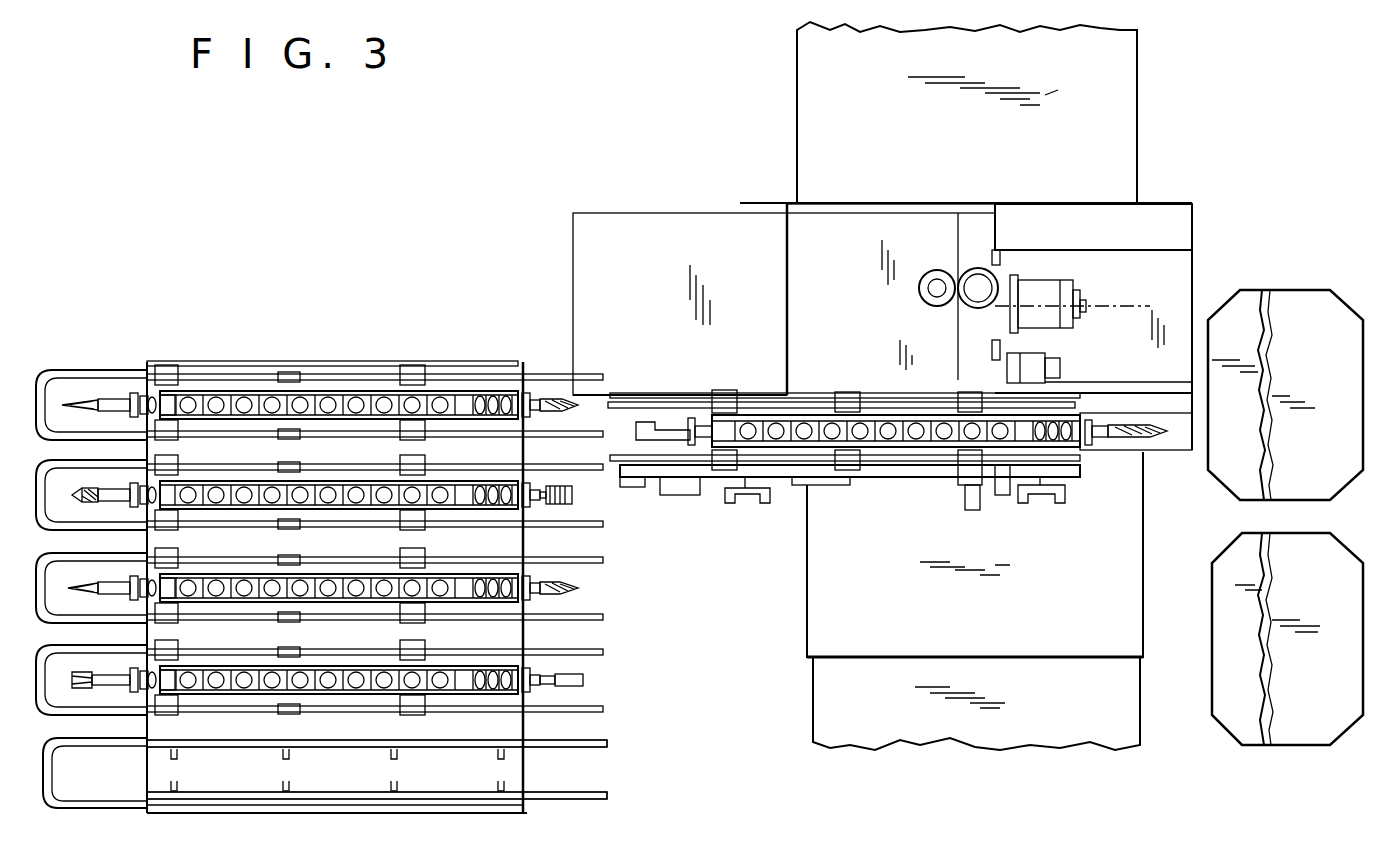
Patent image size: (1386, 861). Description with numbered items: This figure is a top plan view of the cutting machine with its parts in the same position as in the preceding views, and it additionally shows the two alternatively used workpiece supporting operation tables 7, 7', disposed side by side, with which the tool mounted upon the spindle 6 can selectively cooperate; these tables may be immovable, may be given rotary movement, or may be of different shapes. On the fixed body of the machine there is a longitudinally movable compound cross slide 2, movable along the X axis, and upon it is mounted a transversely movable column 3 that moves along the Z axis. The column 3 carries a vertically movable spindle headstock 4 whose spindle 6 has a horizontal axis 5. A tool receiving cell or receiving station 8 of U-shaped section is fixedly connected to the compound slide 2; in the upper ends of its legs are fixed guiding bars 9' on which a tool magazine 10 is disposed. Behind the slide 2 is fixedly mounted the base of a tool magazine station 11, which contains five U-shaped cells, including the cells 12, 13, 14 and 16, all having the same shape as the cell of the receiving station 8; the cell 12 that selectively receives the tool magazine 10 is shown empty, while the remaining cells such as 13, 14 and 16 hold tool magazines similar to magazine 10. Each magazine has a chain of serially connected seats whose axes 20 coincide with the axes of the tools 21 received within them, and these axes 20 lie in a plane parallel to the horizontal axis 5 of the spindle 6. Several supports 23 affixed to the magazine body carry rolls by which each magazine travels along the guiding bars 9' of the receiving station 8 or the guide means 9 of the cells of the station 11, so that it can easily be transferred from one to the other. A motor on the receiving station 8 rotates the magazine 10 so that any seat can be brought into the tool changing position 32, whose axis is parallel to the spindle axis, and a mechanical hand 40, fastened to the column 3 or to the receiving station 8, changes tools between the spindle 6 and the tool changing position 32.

The compound cross slide 2 is at (1178, 240).
The transversely movable column 3 is at (812, 262).
The spindle headstock 4 is at (1010, 283).
The horizontal axis 5 is at (1132, 306).
The spindle 6 is at (1086, 300).
The workpiece supporting operation table 7 is at (1285, 375).
The workpiece supporting operation table 7' is at (1287, 664).
The receiving station 8 is at (904, 478).
The guide means 9 is at (404, 769).
The guiding bars 9' is at (844, 398).
The tool magazine 10 is at (722, 435).
The tool magazine station 11 is at (305, 362).
The cell 12 is at (155, 770).
The cell 13 is at (170, 690).
The cell 14 is at (170, 598).
The cell 16 is at (168, 415).
The axes 20 is at (575, 495).
The tools 21 is at (550, 397).
The supports 23 is at (168, 372).
The tool changing position 32 is at (1107, 440).
The mechanical hand 40 is at (1063, 365).